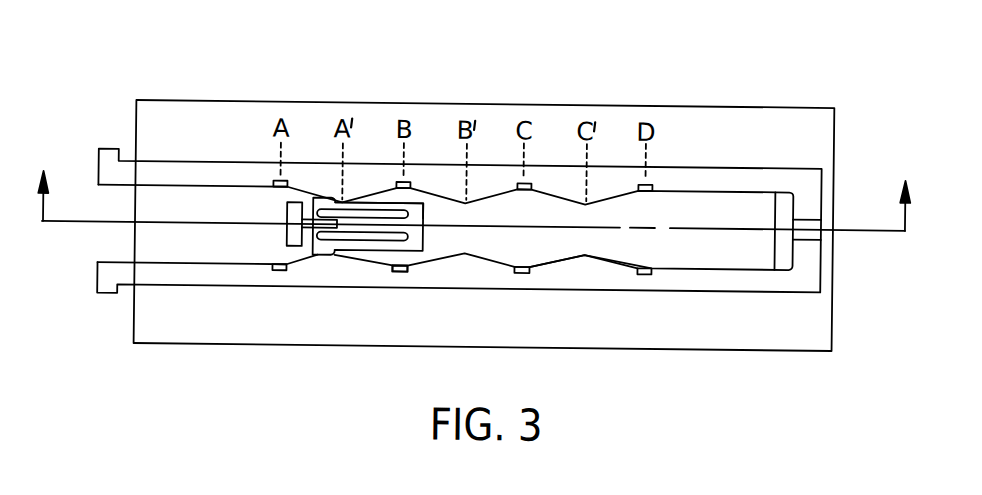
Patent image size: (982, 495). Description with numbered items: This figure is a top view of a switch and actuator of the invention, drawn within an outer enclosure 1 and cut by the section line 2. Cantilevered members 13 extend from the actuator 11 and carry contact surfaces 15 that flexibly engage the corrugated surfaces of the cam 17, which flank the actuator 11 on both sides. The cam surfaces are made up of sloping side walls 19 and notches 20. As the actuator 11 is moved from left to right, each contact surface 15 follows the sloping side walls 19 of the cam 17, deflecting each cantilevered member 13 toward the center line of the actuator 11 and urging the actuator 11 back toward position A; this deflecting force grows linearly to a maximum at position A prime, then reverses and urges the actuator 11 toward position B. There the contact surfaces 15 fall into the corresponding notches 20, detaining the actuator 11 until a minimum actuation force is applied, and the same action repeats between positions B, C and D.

The enclosure 1 is at (713, 100).
The section line 2- 2 is at (473, 185).
The actuator 11 is at (423, 210).
The cantilevered member 13 is at (368, 248).
The contact surface 15 is at (313, 251).
The cam 17 is at (697, 160).
The sloping side wall 19 is at (608, 256).
The notch 20 is at (408, 268).